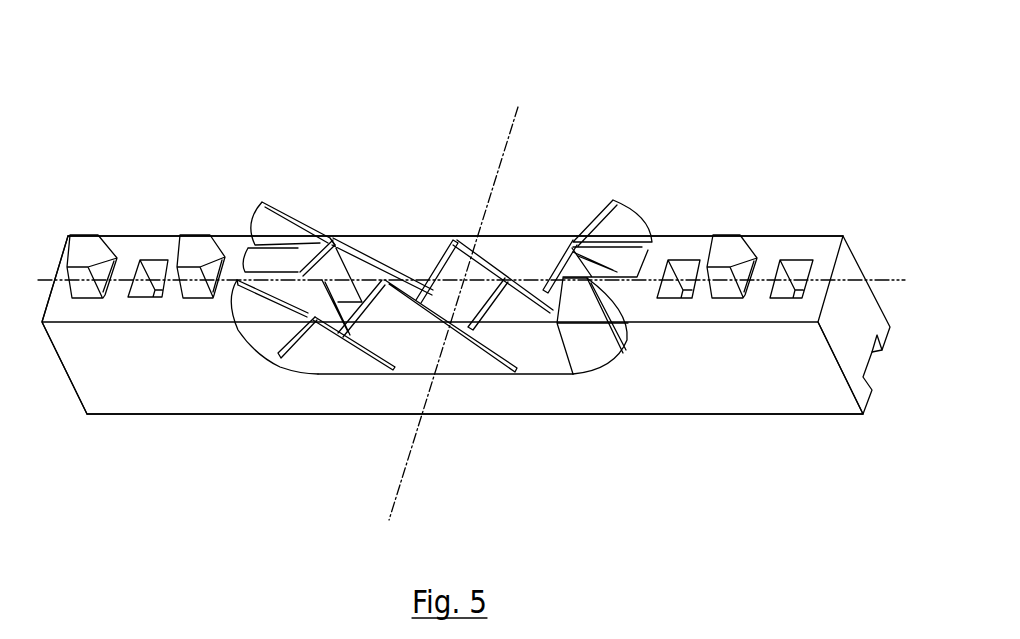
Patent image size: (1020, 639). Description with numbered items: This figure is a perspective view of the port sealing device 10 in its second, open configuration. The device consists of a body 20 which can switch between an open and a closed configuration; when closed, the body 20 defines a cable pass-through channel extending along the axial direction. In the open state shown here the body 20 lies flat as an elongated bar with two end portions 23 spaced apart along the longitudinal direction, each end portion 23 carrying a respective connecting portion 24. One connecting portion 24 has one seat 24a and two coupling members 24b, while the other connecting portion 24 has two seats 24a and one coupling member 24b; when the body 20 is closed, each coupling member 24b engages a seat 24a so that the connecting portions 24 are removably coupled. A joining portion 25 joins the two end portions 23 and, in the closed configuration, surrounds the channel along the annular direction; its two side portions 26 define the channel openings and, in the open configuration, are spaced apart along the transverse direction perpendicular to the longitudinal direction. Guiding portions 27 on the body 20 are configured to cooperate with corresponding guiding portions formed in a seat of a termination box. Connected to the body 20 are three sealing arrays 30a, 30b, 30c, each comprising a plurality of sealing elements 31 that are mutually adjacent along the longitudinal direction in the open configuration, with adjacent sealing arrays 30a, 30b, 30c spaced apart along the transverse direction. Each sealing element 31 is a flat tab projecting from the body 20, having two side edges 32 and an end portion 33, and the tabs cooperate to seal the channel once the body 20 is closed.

The port sealing device 10 is at (326, 145).
The body 20 is at (268, 400).
The end portions 23 is at (118, 393).
The connecting portions 24 is at (127, 247).
The seat 24a is at (155, 272).
The coupling member 24b is at (83, 243).
The joining portion 25 is at (522, 407).
The side portions 26 is at (448, 398).
The guiding portions 27 is at (863, 368).
The sealing array 30a is at (243, 218).
The sealing array 30b is at (622, 268).
The sealing array 30c is at (642, 340).
The sealing elements 31 is at (513, 300).
The side edges 32 is at (440, 290).
The end portion 33 is at (385, 290).